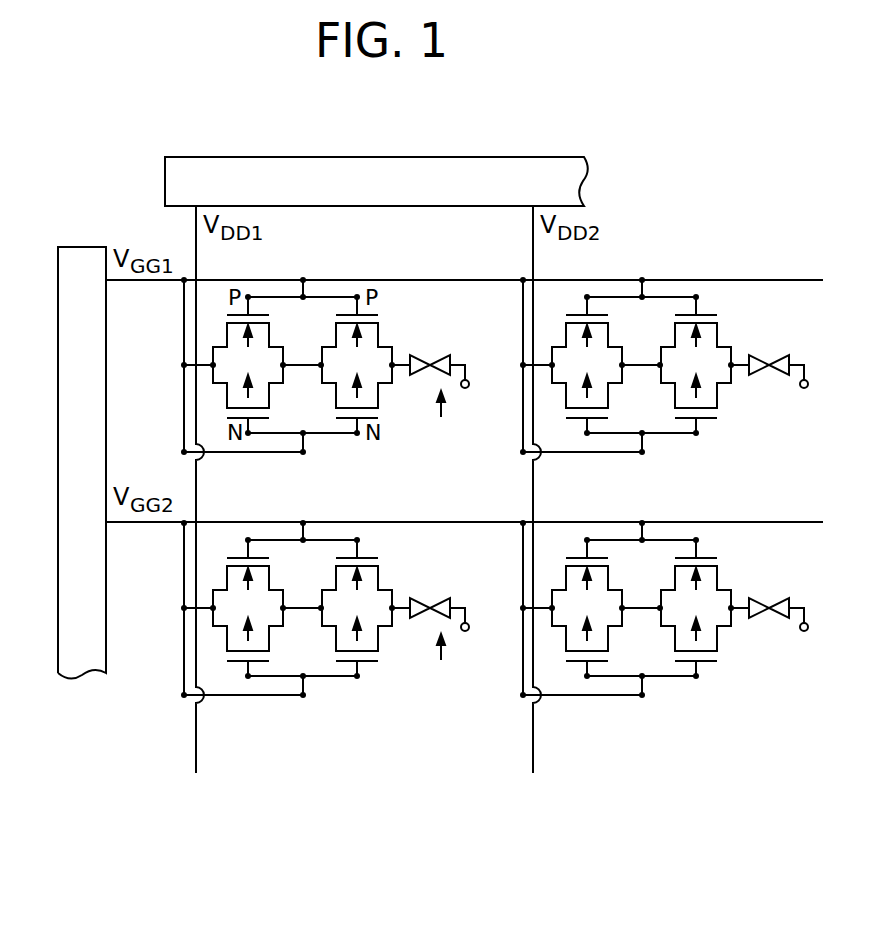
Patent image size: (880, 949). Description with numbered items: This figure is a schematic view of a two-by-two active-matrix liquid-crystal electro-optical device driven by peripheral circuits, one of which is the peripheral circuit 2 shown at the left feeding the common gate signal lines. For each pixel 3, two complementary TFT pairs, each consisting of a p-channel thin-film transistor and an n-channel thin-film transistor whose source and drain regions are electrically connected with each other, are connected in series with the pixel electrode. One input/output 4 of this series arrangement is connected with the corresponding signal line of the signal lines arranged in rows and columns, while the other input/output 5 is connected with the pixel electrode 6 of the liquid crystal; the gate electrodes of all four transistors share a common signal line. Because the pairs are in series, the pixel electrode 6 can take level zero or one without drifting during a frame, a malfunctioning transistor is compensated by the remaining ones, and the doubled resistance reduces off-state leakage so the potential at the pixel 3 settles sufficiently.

The peripheral circuit 2 is at (70, 427).
The pixel 3 is at (452, 416).
The input/output 4 is at (198, 368).
The input/output 5 is at (396, 362).
The pixel electrode 6 is at (396, 377).